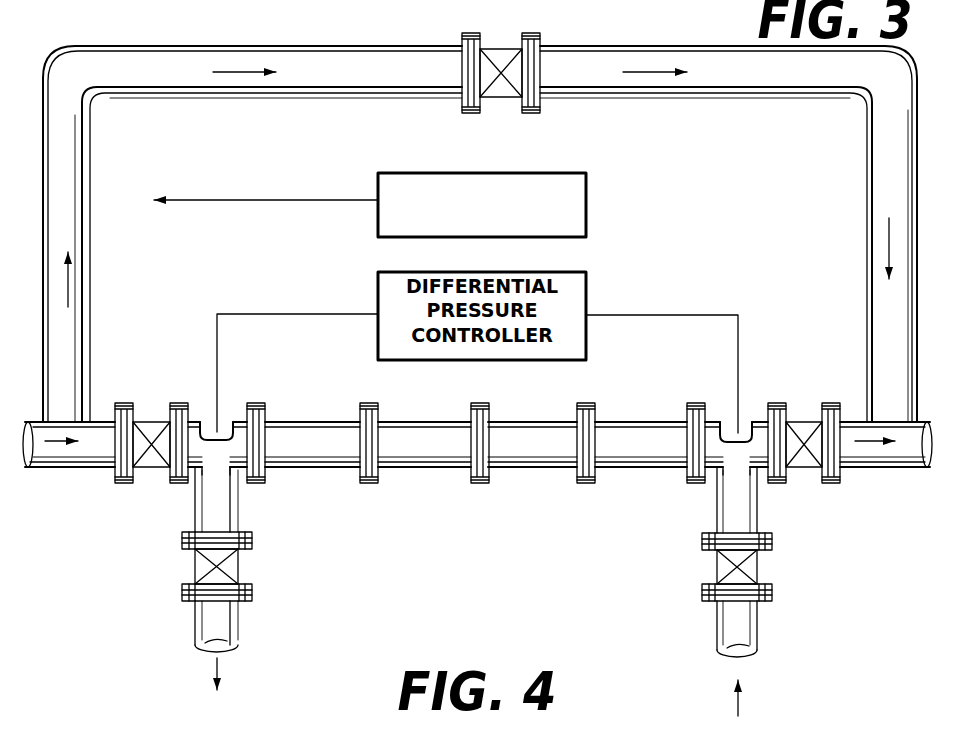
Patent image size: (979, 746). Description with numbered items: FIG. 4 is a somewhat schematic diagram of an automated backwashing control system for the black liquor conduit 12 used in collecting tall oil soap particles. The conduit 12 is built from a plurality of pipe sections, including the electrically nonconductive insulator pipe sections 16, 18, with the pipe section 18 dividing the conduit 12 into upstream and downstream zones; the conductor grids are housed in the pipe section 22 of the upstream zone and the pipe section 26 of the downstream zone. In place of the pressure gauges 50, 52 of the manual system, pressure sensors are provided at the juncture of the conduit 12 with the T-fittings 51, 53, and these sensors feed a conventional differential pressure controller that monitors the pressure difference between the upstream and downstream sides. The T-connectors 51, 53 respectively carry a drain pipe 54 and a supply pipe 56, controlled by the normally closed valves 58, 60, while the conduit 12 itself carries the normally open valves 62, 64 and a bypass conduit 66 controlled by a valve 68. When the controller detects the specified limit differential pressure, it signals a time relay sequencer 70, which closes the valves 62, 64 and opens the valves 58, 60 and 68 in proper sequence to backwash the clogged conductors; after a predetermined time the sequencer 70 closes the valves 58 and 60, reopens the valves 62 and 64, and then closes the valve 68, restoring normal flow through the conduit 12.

The conduit 12 is at (60, 468).
The pipe section 16 is at (330, 468).
The pipe section 18 is at (527, 468).
The pipe section 22 is at (430, 468).
The pipe section 26 is at (638, 468).
The pressure gauge 50 is at (217, 428).
The T-connector 51 is at (205, 463).
The pressure gauge 52 is at (737, 430).
The T-connector 53 is at (730, 458).
The drain pipe 54 is at (238, 515).
The supply pipe 56 is at (760, 512).
The valve 58 is at (240, 566).
The valve 60 is at (762, 568).
The valve 62 is at (155, 419).
The valve 64 is at (807, 420).
The bypass conduit 66 is at (92, 136).
The valve 68 is at (508, 48).
The time relay sequencer 70 is at (587, 203).